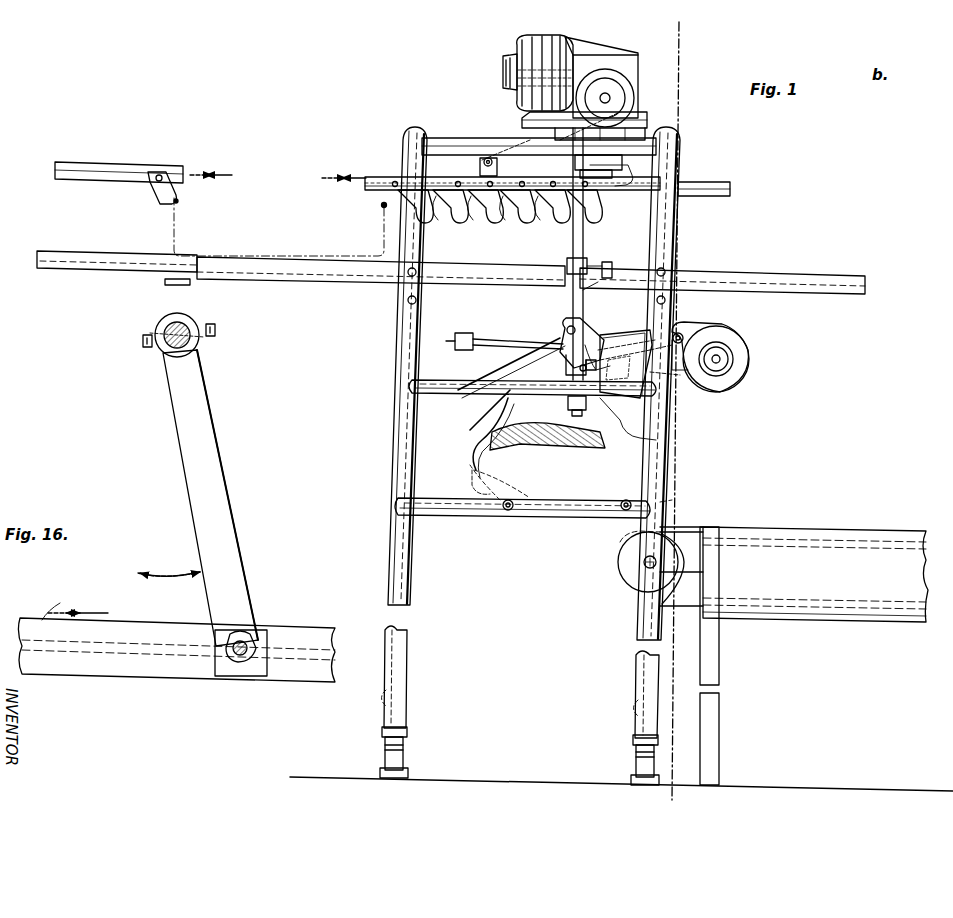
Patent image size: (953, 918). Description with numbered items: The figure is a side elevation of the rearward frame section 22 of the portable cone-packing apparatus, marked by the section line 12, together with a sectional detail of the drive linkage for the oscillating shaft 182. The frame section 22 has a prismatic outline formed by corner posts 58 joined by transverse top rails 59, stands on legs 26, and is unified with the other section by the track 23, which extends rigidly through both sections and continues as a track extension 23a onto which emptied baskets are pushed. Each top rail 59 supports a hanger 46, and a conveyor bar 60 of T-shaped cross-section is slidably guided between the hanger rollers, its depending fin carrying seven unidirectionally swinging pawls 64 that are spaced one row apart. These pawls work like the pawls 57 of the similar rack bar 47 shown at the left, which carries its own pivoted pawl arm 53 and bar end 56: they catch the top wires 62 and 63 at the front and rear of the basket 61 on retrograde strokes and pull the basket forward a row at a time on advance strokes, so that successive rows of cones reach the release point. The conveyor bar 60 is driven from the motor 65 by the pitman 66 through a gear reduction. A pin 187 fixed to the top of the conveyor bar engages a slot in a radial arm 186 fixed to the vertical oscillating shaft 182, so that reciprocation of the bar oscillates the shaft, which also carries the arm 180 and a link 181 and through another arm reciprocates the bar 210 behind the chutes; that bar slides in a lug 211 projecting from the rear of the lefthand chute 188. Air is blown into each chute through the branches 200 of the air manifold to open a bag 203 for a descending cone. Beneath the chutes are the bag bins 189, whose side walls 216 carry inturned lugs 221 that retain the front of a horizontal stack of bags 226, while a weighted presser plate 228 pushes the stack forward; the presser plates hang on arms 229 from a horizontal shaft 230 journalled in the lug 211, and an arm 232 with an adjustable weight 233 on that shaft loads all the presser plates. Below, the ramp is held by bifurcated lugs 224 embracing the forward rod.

In FIG. 1B, the section line 12 is at (652, 38).
In FIG. 1B, the frame section 22 is at (386, 589).
In FIG. 1B, the track 23 is at (296, 268).
In FIG. 1B, the track extension 23a is at (782, 280).
In FIG. 1B, the adjustable leg 26 is at (405, 753).
In FIG. 1B, the hanger 46 is at (405, 174).
In FIG. 1B, the rack bar 47 is at (92, 163).
In FIG. 1B, the pivoted arm 53 is at (140, 164).
In FIG. 1B, the bar end 56 is at (112, 186).
In FIG. 1B, the pawls 57 is at (160, 192).
In FIG. 1B, the corner posts 58 is at (397, 460).
In FIG. 1B, the top rails 59 is at (414, 136).
In FIG. 1B, the conveyor bar 60 is at (702, 197).
In FIG. 16, the conveyor bar 60 is at (158, 634).
In FIG. 1B, the basket 61 is at (250, 250).
In FIG. 1B, the top wire 62 is at (381, 206).
In FIG. 1B, the top wire 63 is at (178, 202).
In FIG. 1B, the pawls 64 is at (410, 225).
In FIG. 1B, the motor 65 is at (550, 40).
In FIG. 1B, the pitman 66 is at (530, 136).
In FIG. 1B, the arm 180 is at (608, 260).
In FIG. 1B, the link 181 is at (598, 284).
In FIG. 1B, the vertical oscillating shaft 182 is at (583, 250).
In FIG. 16, the vertical oscillating shaft 182 is at (165, 322).
In FIG. 1B, the radial arm 186 is at (624, 188).
In FIG. 16, the radial arm 186 is at (222, 496).
In FIG. 16, the pin 187 is at (252, 634).
In FIG. 1B, the lefthand chute 188 is at (616, 340).
In FIG. 1B, the bag bins 189 is at (478, 486).
In FIG. 1B, the branches of air manifold 200 is at (706, 340).
In FIG. 1B, the bag 203 is at (738, 352).
In FIG. 1B, the bar 210 is at (532, 384).
In FIG. 1B, the lug 211 is at (573, 320).
In FIG. 1B, the side wall 216 is at (615, 484).
In FIG. 1B, the inturned lugs 221 is at (614, 416).
In FIG. 1B, the bifurcated lugs 224 is at (674, 501).
In FIG. 1B, the stack of bags 226 is at (540, 440).
In FIG. 1B, the weighted presser plate 228 is at (484, 450).
In FIG. 1B, the arms 229 is at (511, 384).
In FIG. 1B, the horizontal shaft 230 is at (568, 330).
In FIG. 1B, the arm 232 is at (512, 340).
In FIG. 1B, the adjustable weight 233 is at (468, 327).